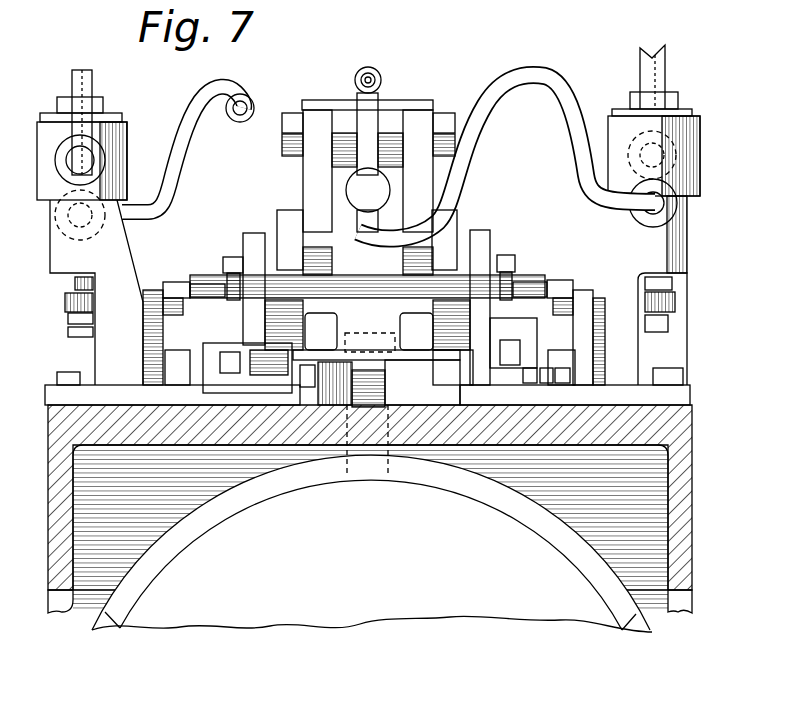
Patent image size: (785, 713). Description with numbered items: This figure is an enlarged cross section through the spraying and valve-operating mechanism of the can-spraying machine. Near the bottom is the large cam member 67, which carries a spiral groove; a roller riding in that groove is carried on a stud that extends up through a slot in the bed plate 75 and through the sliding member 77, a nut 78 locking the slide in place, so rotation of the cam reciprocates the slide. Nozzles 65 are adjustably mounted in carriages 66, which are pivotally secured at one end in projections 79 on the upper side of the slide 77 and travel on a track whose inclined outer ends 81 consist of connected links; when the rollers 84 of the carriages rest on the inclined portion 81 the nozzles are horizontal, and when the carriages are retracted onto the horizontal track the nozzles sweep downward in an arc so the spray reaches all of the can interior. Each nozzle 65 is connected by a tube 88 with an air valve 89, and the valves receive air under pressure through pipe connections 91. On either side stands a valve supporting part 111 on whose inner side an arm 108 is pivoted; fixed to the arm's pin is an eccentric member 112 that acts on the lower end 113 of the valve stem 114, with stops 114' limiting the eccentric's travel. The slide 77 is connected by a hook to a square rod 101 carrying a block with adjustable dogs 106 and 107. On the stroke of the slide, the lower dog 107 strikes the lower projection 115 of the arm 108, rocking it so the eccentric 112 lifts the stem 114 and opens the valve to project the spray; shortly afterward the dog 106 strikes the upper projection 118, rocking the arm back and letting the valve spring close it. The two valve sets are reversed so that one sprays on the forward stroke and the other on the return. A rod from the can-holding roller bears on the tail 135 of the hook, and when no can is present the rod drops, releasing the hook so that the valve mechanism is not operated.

The nozzle 65 is at (372, 72).
The carriage 66 is at (312, 178).
The cam member 67 is at (104, 626).
The bed plate 75 is at (395, 465).
The sliding member 77 is at (385, 375).
The nut 78 is at (402, 340).
The projection 79 is at (352, 330).
The inclined outer end of track 81 is at (283, 292).
The roller 84 is at (288, 222).
The tube 88 is at (196, 144).
The air valve 89 is at (44, 180).
The pipe connection 91 is at (80, 90).
The square rod 101 is at (232, 362).
The dog 106 is at (176, 294).
The dog 107 is at (158, 382).
The arm 108 is at (585, 318).
The valve supporting part 111 is at (107, 343).
The eccentric member 112 is at (68, 335).
The lower end of valve stem 113 is at (70, 301).
The valve stem 114 is at (694, 278).
The stop 114' is at (368, 331).
The lower projection 115 is at (176, 356).
The upper projection 118 is at (168, 306).
The tail of hook 135 is at (340, 455).